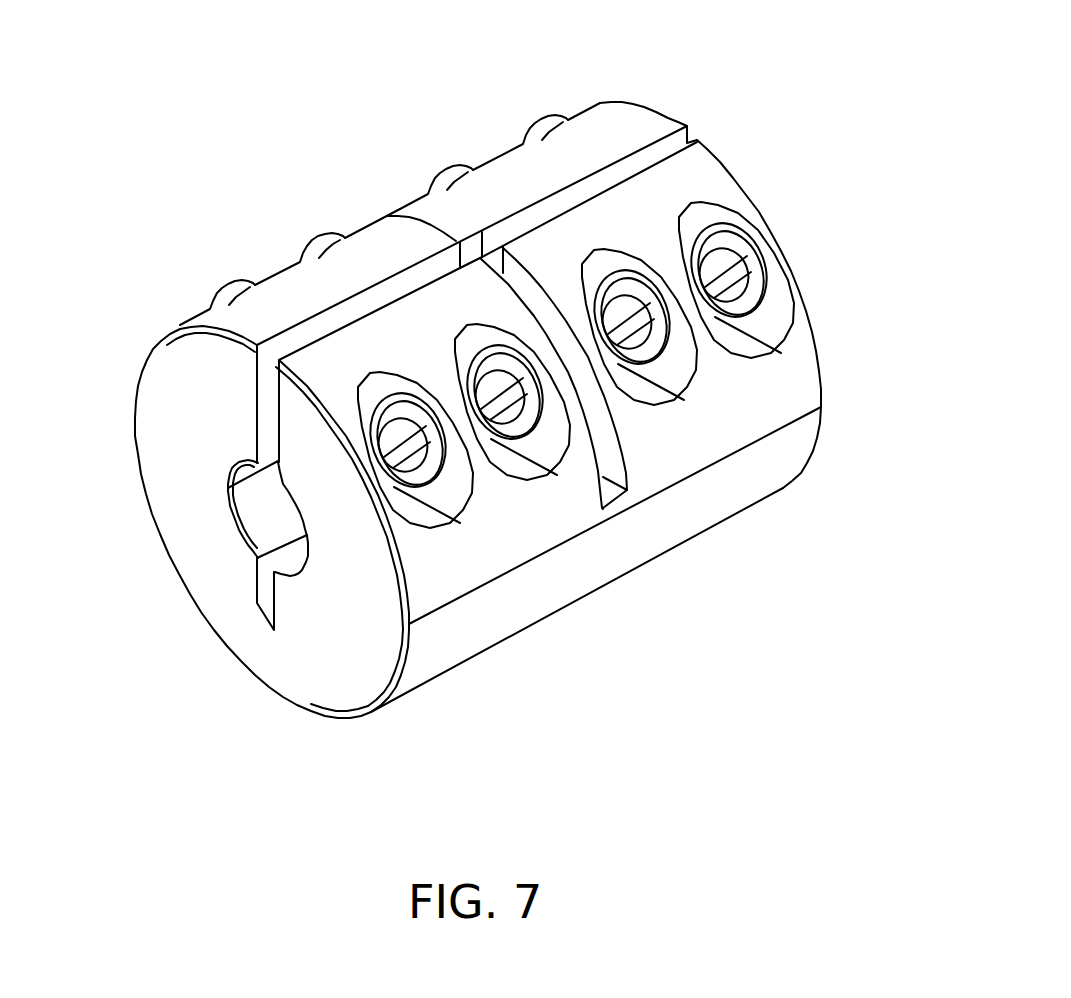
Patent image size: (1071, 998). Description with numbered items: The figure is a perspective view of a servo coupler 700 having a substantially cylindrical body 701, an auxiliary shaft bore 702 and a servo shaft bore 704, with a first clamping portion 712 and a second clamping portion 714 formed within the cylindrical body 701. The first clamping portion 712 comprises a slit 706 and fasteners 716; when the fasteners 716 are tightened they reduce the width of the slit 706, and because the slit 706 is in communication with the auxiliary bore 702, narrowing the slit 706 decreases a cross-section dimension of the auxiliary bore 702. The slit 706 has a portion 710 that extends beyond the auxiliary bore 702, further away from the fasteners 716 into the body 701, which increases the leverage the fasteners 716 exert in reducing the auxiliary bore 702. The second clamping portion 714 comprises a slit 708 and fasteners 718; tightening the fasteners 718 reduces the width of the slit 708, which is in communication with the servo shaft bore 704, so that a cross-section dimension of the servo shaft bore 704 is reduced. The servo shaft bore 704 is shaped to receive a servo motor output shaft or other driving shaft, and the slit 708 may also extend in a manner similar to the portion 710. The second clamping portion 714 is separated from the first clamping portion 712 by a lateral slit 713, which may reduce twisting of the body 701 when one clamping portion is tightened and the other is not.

The coupler 700 is at (296, 62).
The body 701 is at (342, 673).
The auxiliary shaft bore 702 is at (268, 537).
The servo shaft bore 704 is at (822, 195).
The slit 706 is at (268, 428).
The slit 708 is at (700, 133).
The portion 710 is at (267, 598).
The first clamping portion 712 is at (292, 303).
The lateral slit 713 is at (613, 467).
The second clamping portion 714 is at (625, 120).
The fasteners 716 is at (518, 432).
The fasteners 718 is at (580, 292).